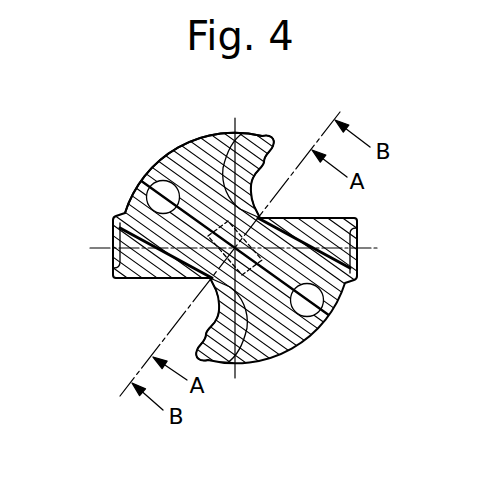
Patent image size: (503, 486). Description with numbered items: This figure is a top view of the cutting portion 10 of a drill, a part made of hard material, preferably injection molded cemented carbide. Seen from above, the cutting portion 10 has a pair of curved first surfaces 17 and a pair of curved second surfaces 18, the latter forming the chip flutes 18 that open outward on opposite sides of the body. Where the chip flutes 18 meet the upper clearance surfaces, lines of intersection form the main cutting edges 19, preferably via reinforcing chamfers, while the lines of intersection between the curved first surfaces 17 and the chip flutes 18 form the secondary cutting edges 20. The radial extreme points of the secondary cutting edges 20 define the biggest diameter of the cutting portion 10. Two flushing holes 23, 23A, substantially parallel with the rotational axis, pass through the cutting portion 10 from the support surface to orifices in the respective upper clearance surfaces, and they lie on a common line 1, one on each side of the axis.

The common line 1 is at (292, 291).
The cutting portion 10 is at (184, 130).
The curved first surfaces 17 is at (145, 178).
The curved second surfaces (chip flutes) 18 is at (264, 140).
The main cutting edges 19 is at (135, 280).
The secondary cutting edges 20 is at (112, 280).
The flushing hole 23 is at (160, 197).
The flushing hole 23A is at (307, 310).